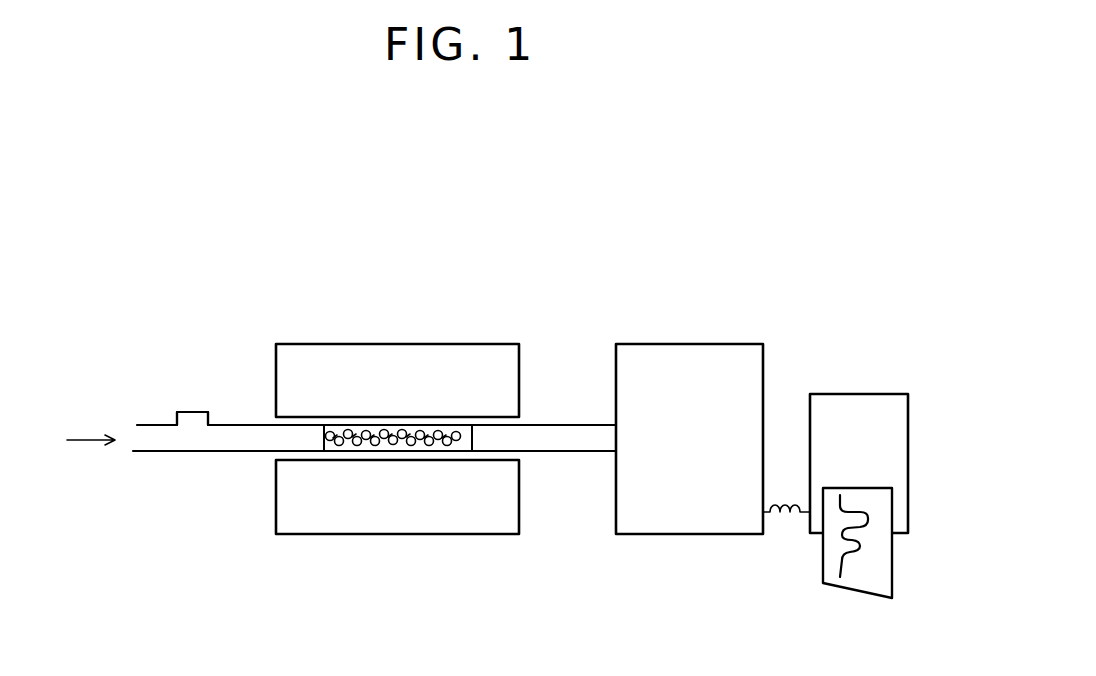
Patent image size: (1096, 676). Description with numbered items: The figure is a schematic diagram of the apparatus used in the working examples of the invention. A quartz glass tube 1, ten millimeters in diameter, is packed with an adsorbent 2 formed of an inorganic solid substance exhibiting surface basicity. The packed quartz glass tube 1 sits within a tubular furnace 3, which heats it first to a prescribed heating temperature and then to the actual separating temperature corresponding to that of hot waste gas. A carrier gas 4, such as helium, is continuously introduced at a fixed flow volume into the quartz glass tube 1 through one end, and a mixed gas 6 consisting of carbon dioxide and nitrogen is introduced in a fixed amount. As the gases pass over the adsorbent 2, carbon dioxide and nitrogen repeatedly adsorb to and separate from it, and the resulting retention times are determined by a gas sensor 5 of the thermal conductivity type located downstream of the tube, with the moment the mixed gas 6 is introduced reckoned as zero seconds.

The quartz glass tube 1 is at (238, 442).
The adsorbent 2 is at (398, 445).
The tubular furnace 3 is at (487, 512).
The carrier gas 4 is at (79, 439).
The gas sensor (TCD) 5 is at (729, 512).
The mixed gas 6 is at (198, 384).